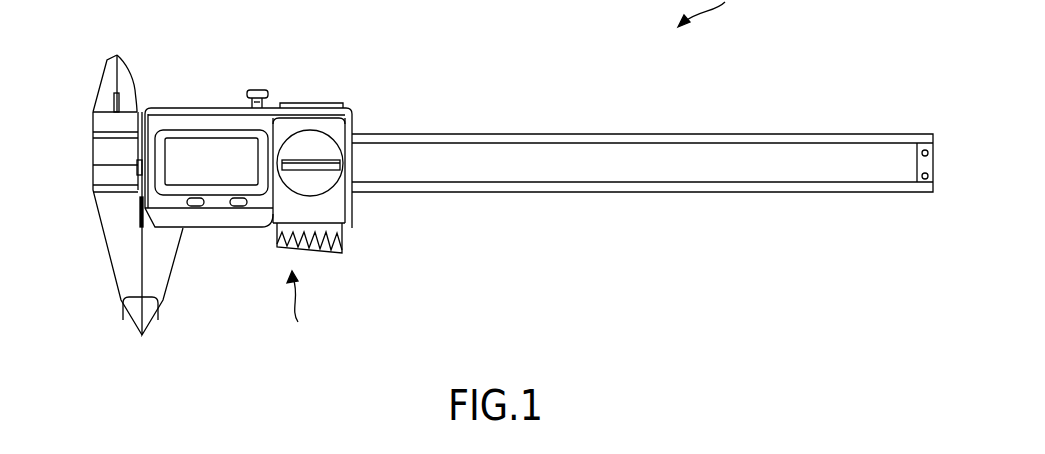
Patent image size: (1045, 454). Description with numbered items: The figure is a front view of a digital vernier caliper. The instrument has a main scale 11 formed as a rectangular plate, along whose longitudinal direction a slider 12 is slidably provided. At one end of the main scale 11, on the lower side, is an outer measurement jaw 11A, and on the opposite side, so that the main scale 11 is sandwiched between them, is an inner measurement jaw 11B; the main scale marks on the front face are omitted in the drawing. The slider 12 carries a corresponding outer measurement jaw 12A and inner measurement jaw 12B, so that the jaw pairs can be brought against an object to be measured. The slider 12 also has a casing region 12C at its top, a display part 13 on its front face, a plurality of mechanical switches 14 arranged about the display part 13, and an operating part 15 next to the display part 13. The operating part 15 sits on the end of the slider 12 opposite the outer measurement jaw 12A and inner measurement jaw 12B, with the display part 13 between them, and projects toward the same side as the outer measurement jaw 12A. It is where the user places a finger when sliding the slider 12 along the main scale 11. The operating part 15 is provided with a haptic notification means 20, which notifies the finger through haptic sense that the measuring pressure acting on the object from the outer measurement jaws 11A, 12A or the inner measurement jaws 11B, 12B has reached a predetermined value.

The main scale 11 is at (690, 110).
The outer measurement jaw 11A is at (118, 287).
The inner measurement jaw 11B is at (125, 70).
The slider 12 is at (315, 108).
The outer measurement jaw 12A is at (165, 293).
The inner measurement jaw 12B is at (105, 75).
The slider casing 12C is at (218, 110).
The display part 13 is at (178, 147).
The mechanical switches 14 is at (240, 208).
The operating part 15 is at (320, 254).
The haptic notification means 20 is at (292, 311).